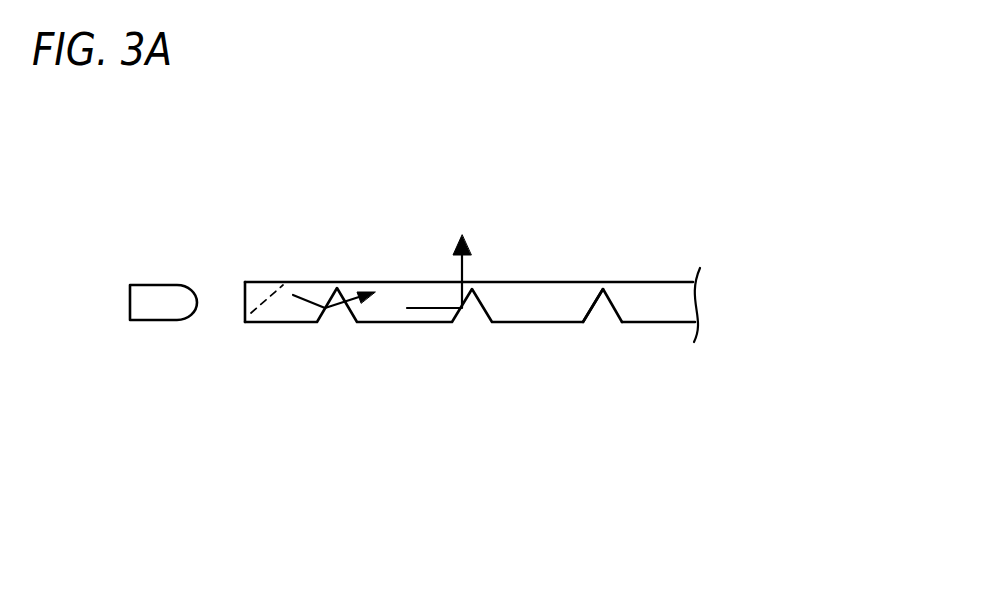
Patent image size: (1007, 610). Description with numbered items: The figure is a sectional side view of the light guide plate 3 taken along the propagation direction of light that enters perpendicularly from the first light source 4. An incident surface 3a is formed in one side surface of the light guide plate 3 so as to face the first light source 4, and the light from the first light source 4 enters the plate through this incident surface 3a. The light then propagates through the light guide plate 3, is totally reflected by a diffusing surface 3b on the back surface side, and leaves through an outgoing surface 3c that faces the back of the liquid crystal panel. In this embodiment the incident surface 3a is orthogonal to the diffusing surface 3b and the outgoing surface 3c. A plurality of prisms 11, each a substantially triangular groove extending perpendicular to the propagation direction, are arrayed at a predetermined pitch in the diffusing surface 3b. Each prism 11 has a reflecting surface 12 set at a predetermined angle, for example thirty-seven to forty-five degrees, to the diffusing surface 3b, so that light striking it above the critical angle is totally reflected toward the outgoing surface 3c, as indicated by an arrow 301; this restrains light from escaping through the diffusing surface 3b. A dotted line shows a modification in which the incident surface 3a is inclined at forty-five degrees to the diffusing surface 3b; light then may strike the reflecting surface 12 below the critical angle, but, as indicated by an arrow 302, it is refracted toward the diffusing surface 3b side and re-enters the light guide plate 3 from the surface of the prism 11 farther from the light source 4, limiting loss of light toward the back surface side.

The light guide plate 3 is at (499, 337).
The incident surface 3a is at (244, 303).
The diffusing surface 3b is at (660, 365).
The outgoing surface 3c is at (662, 282).
The first light source 4 is at (150, 321).
The prisms 11 is at (604, 322).
The reflecting surface 12 is at (586, 298).
The arrow 301 is at (464, 273).
The arrow 302 is at (300, 297).